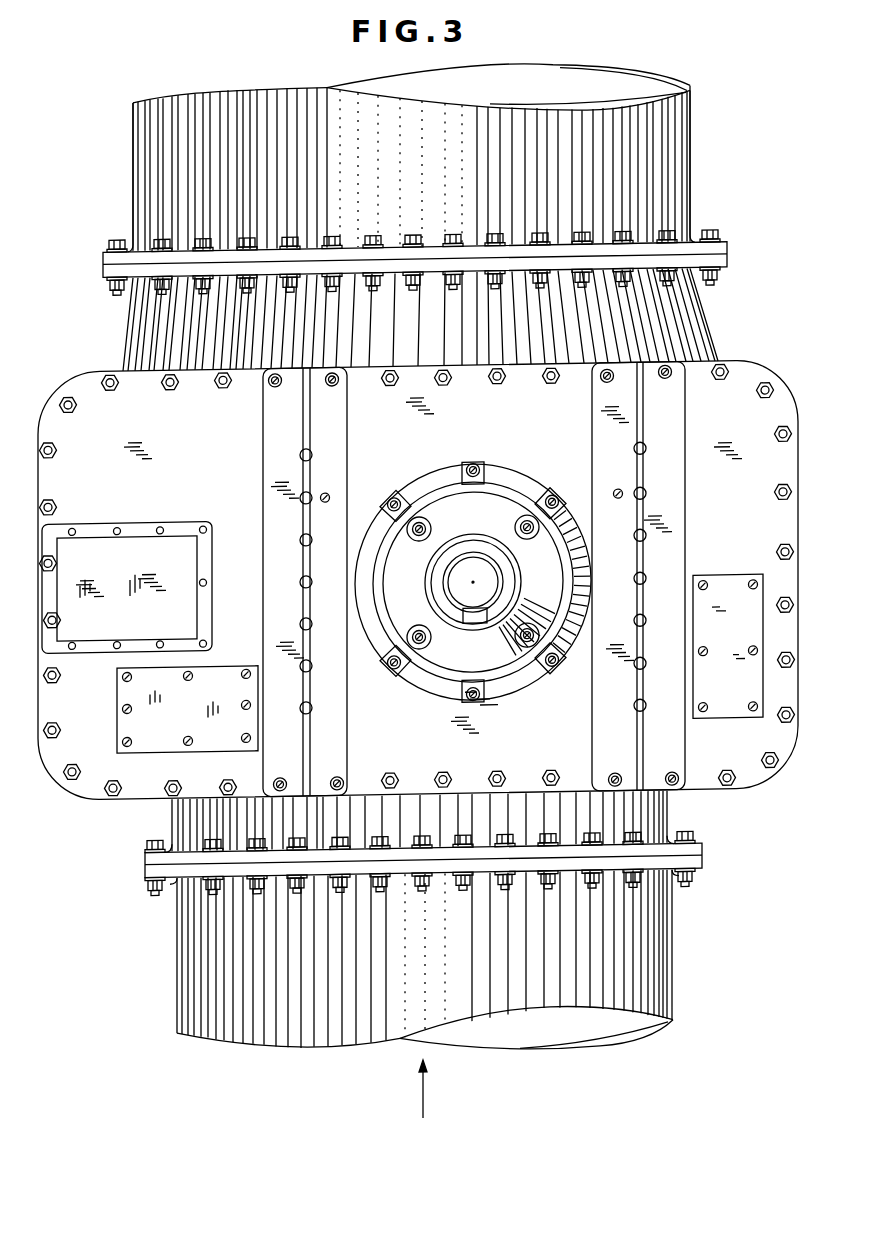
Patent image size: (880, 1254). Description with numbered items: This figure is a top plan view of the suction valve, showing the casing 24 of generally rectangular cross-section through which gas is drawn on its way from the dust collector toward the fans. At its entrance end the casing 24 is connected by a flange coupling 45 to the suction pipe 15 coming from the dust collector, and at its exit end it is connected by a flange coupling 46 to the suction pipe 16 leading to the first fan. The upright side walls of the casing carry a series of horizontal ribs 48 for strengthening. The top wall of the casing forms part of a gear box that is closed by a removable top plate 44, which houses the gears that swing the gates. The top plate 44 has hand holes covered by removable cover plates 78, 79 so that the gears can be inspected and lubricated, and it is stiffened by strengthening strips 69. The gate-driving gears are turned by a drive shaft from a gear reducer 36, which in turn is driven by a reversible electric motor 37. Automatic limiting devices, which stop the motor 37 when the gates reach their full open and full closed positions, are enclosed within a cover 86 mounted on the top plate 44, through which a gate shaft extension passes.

The suction pipe 15 is at (200, 963).
The suction pipe 16 is at (670, 186).
The casing 24 is at (712, 318).
The gear reducer 36 is at (455, 651).
The reversible electric motor 37 is at (508, 585).
The removable top plate 44 is at (418, 580).
The flange coupling 45 is at (702, 855).
The flange coupling 46 is at (720, 262).
The horizontal ribs 48 is at (162, 803).
The strengthening strips 69 is at (303, 420).
The removable cover plate 78 is at (217, 680).
The removable cover plate 79 is at (723, 607).
The cover 86 is at (132, 542).